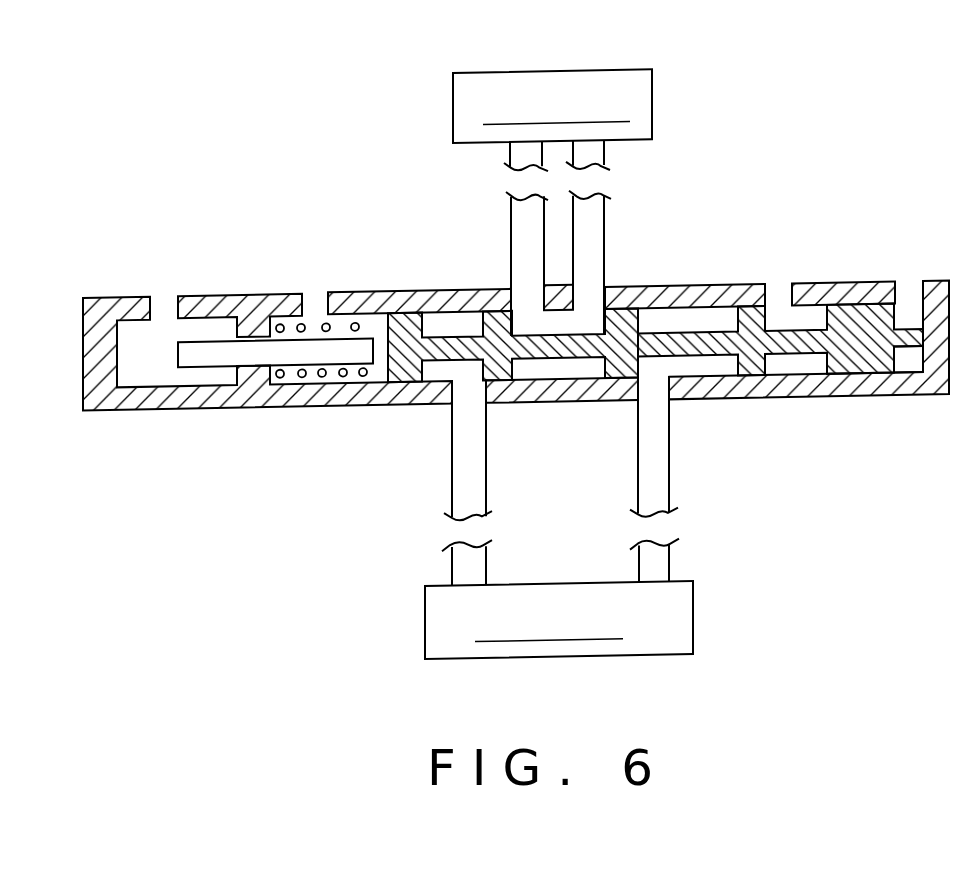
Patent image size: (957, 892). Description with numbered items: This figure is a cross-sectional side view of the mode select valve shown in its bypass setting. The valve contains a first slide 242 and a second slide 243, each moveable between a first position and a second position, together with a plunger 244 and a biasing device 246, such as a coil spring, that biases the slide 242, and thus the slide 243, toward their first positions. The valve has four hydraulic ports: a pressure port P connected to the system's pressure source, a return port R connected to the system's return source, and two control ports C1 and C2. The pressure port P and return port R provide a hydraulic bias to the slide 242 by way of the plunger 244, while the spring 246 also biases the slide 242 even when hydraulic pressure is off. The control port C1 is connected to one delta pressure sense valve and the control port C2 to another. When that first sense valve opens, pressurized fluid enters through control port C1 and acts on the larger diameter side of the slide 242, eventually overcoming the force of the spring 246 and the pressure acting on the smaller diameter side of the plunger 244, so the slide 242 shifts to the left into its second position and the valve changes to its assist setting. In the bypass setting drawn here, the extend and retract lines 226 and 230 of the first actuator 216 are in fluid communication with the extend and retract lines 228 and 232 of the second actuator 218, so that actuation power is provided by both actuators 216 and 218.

The first actuator 216 is at (559, 597).
The second actuator 218 is at (552, 121).
The extend line 226 is at (452, 502).
The extend line 228 is at (511, 275).
The retract line 230 is at (669, 501).
The retract line 232 is at (604, 271).
The first slide 242 is at (574, 368).
The second slide 243 is at (899, 370).
The plunger 244 is at (210, 369).
The biasing device 246 is at (324, 382).
The pressure port P is at (164, 289).
The return port R is at (315, 287).
The control port C1 is at (777, 281).
The control port C2 is at (909, 280).